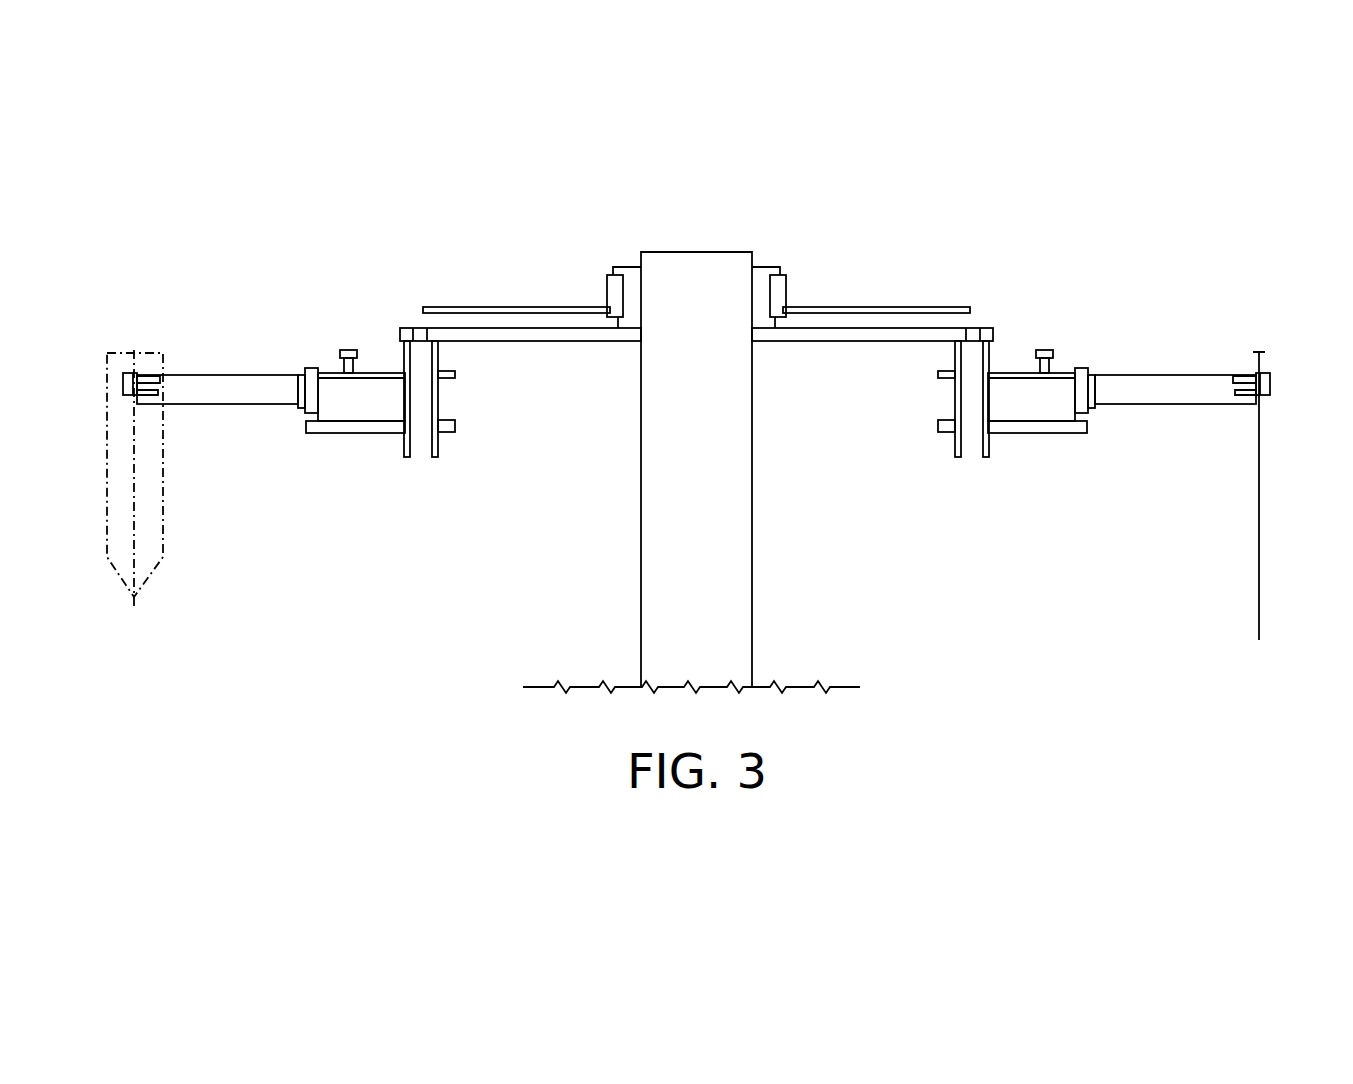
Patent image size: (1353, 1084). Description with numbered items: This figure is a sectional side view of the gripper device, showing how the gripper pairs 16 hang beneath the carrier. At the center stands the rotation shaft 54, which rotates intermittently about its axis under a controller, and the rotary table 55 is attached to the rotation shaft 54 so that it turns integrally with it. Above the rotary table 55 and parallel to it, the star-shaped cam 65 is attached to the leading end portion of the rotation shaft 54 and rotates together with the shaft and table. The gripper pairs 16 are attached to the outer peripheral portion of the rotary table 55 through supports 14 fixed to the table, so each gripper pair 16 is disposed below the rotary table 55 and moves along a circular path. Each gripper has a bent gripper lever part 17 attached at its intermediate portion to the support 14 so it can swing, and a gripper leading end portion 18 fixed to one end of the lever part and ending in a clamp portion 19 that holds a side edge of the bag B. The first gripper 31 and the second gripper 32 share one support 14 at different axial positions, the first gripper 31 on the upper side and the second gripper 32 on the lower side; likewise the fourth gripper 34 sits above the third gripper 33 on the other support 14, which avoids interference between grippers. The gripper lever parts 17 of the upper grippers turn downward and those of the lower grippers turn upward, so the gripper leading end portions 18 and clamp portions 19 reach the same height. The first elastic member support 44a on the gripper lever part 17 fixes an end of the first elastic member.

The rotation shaft 54 is at (697, 267).
The star-shaped cam 65 is at (518, 307).
The rotary table 55 is at (548, 335).
The support 14 is at (420, 455).
The gripper lever part 17 is at (455, 423).
The first gripper 31 is at (330, 373).
The fourth gripper 34 is at (1063, 373).
The second gripper 32 is at (330, 425).
The third gripper 33 is at (1063, 425).
The first elastic member support 44a is at (345, 350).
The gripper leading end portion 18 is at (221, 397).
The clamp portion 19 is at (140, 385).
The gripper pair 16 is at (354, 512).
The bag B is at (140, 352).